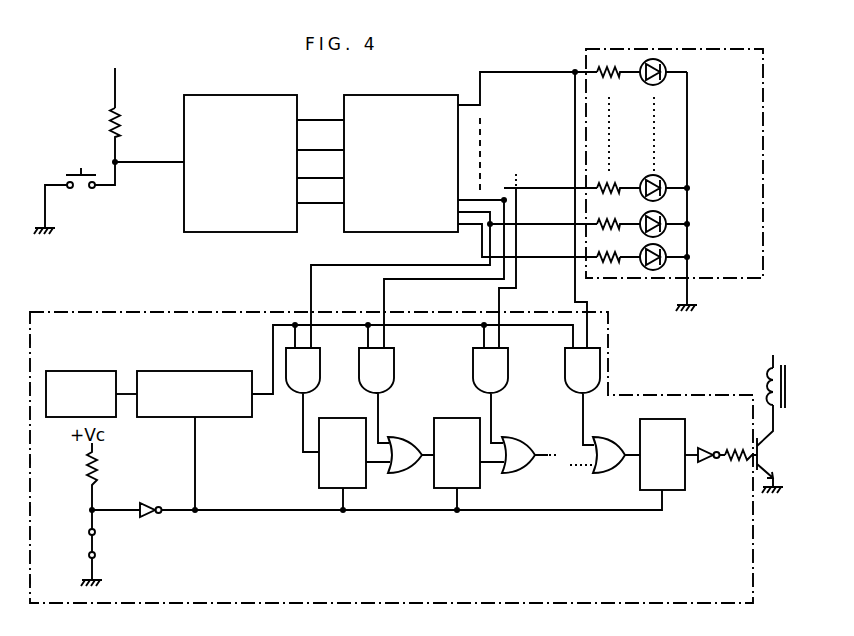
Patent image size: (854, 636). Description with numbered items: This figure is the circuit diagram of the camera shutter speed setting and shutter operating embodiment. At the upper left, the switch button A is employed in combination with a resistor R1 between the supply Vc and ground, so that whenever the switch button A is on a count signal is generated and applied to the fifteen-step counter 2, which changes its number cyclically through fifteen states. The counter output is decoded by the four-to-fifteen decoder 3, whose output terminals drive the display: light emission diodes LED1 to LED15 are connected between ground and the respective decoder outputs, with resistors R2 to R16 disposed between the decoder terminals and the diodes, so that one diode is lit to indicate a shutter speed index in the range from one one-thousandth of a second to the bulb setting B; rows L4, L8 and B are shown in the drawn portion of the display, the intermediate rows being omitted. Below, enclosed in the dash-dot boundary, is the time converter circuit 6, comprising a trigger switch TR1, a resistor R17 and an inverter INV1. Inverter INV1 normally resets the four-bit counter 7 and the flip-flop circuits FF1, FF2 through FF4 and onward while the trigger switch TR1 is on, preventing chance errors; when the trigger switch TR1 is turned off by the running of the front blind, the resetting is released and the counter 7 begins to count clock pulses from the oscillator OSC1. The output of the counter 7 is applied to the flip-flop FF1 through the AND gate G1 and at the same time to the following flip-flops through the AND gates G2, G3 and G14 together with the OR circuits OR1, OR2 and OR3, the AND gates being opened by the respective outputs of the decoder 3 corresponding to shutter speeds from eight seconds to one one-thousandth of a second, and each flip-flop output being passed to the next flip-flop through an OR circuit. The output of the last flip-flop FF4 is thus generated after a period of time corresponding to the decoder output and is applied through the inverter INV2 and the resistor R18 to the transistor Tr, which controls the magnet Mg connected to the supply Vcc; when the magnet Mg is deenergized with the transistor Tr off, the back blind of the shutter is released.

The 15 counter 2 is at (256, 95).
The 4-15 decoder 3 is at (418, 95).
The time converter circuit 6 is at (632, 395).
The 4-bit counter 7 is at (195, 371).
The supply voltage Vc is at (117, 79).
The resistor R1 is at (120, 122).
The switch button A is at (81, 189).
The resistor R2 is at (607, 60).
The light emission diode LED1 is at (655, 58).
The LED row L4 is at (653, 188).
The LED row L8 is at (653, 224).
The bulb setting index B is at (662, 259).
The resistor R16 is at (608, 266).
The light emission diode LED15 is at (655, 270).
The oscillator OSC1 is at (81, 394).
The resistor R17 is at (99, 468).
The trigger switch TR1 is at (97, 548).
The inverter INV1 is at (152, 516).
The AND gate G1 is at (303, 400).
The AND gate G2 is at (376, 395).
The AND gate G3 is at (490, 395).
The AND gate G14 is at (582, 396).
The flip-flop circuit FF1 is at (354, 464).
The flip-flop circuit FF2 is at (469, 464).
The flip-flop circuit FF4 is at (669, 454).
The OR circuit OR1 is at (400, 471).
The OR circuit OR2 is at (520, 471).
The OR circuit OR3 is at (612, 471).
The inverter INV2 is at (706, 441).
The resistor R18 is at (738, 463).
The transistor Tr is at (775, 456).
The magnet Mg is at (766, 392).
The supply voltage Vcc is at (777, 352).